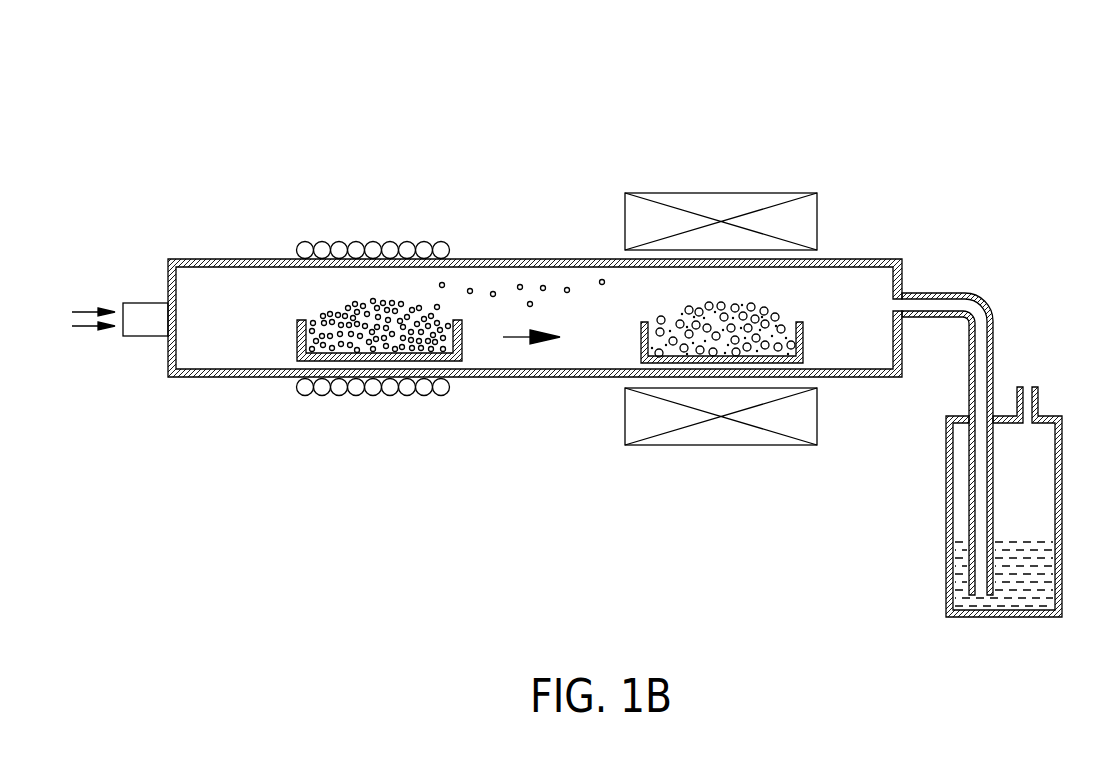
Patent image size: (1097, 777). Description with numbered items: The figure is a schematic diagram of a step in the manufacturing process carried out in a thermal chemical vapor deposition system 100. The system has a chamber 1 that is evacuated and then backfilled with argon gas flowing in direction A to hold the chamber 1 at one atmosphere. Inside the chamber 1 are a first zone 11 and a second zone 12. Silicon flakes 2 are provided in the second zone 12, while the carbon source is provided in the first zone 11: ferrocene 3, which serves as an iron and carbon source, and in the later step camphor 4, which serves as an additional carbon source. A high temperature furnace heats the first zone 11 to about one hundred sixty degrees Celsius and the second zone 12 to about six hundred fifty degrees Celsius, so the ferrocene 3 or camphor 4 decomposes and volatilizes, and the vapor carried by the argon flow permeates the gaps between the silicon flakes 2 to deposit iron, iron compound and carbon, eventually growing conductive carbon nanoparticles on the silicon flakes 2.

The thermal chemical vapor deposition system 100 is at (1044, 134).
The chamber 1 is at (858, 378).
The silicon flakes 2 is at (780, 313).
The ferrocene 3 is at (655, 318).
The camphor 4 is at (439, 305).
The first zone 11 is at (376, 224).
The second zone 12 is at (744, 171).